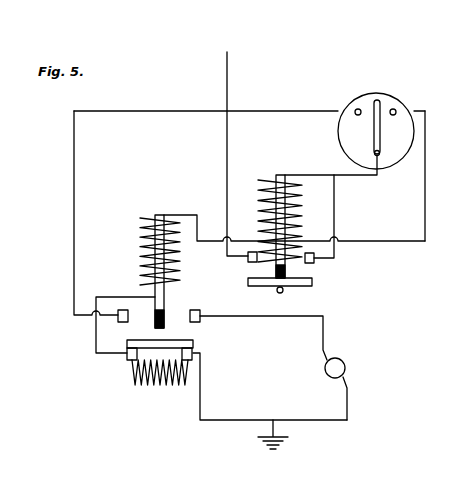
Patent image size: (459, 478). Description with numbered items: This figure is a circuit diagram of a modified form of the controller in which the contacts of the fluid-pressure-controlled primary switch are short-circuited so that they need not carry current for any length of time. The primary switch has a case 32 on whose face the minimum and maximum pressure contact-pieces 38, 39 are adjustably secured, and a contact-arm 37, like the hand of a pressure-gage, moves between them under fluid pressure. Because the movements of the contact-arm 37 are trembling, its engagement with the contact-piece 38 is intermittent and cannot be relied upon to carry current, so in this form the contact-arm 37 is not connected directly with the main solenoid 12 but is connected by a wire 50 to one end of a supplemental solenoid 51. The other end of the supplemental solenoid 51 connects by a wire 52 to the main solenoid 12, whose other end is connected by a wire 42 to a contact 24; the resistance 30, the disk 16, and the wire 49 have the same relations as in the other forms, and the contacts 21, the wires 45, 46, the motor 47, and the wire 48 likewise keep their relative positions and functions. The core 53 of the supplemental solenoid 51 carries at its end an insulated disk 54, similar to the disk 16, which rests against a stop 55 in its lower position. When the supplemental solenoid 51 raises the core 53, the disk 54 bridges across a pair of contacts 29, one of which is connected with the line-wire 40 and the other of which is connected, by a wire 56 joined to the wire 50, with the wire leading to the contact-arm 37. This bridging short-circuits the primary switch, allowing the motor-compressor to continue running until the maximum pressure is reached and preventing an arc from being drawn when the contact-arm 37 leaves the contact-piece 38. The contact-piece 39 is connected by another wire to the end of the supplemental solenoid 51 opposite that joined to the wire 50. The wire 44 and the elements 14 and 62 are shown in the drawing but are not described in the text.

The main solenoid 12 is at (150, 245).
The solenoid core / plunger 14 is at (168, 312).
The disk 16 is at (194, 342).
The contacts 21 is at (122, 322).
The contact 24 is at (125, 357).
The contacts 29 is at (246, 266).
The resistance 30 is at (160, 386).
The case 32 is at (403, 162).
The contact-arm 37 is at (374, 134).
The minimum pressure contact-piece 38 is at (356, 110).
The maximum pressure contact-piece 39 is at (395, 110).
The line-wire 40 is at (228, 81).
The wire 42 is at (96, 336).
The conductor 44 is at (284, 112).
The wire 45 is at (75, 192).
The wire 46 is at (283, 318).
The motor 47 is at (346, 369).
The wire 48 is at (303, 419).
The wire 49 is at (201, 394).
The wire 50 is at (320, 174).
The supplemental solenoid 51 is at (266, 205).
The wire 52 is at (200, 214).
The core 53 is at (285, 257).
The insulated disk 54 is at (300, 288).
The stop 55 is at (278, 293).
The wire 56 is at (335, 208).
The conductor 62 is at (425, 210).